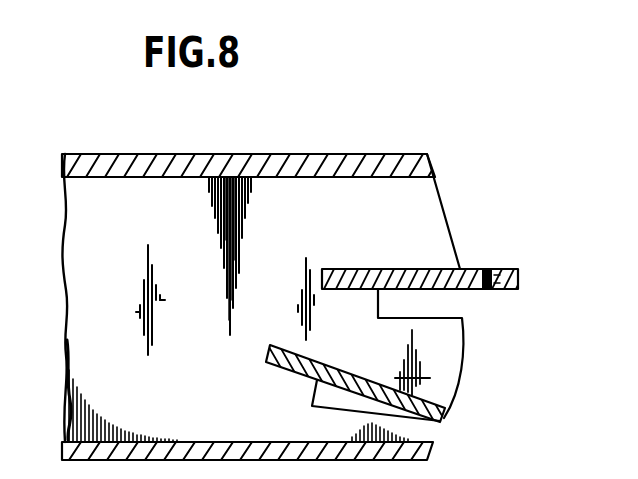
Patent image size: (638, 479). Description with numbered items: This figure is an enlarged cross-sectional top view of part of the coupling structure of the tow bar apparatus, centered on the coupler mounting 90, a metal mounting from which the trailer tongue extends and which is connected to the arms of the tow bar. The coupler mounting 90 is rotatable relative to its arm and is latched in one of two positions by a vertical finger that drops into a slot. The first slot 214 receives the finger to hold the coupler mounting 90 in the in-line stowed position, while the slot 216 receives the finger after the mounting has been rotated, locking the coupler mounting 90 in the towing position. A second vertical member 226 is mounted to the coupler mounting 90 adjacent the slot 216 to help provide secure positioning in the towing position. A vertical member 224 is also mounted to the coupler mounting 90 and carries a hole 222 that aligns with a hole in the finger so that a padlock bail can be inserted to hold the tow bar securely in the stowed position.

The coupler mounting 90 is at (358, 154).
The first slot 214 is at (442, 316).
The vertical member 224 is at (402, 268).
The hole 222 is at (492, 269).
The second vertical member 226 is at (438, 376).
The slot 216 is at (410, 432).